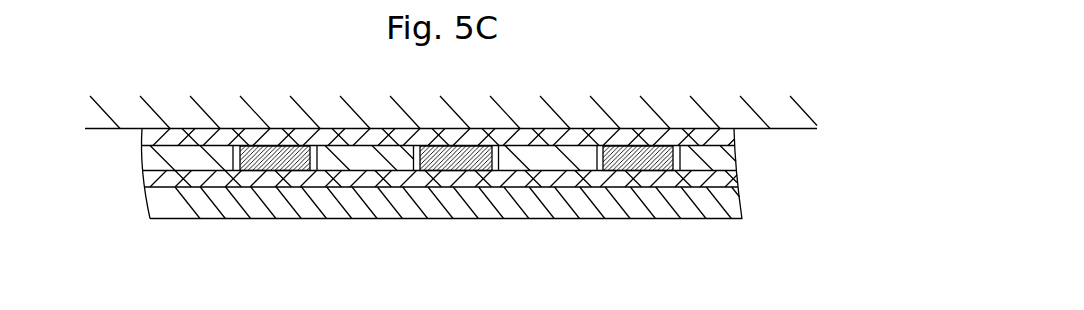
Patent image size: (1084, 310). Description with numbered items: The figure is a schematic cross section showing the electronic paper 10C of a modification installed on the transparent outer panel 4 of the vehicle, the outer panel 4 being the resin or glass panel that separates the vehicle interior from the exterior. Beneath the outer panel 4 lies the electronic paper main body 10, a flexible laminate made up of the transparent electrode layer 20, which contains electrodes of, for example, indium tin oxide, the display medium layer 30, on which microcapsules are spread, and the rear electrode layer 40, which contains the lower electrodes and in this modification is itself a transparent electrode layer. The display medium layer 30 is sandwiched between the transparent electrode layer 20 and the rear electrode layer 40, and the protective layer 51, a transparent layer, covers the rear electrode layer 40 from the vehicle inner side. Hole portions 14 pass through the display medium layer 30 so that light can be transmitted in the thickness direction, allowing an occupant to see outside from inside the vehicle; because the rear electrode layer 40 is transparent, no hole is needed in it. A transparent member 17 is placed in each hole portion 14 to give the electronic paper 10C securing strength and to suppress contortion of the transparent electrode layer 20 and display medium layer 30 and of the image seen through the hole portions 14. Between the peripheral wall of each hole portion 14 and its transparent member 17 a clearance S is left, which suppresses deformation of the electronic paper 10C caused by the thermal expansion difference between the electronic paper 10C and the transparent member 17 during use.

The outer panel 4 is at (788, 110).
The electronic paper main body 10 is at (490, 196).
The electronic paper 10C is at (527, 196).
The transparent electrode layer 20 is at (723, 138).
The display medium layer 30 is at (468, 205).
The rear electrode layer 40 is at (468, 187).
The protective layer 51 is at (715, 213).
The transparent member 17 is at (273, 163).
The hole portion 14 is at (311, 165).
The clearance S is at (237, 171).